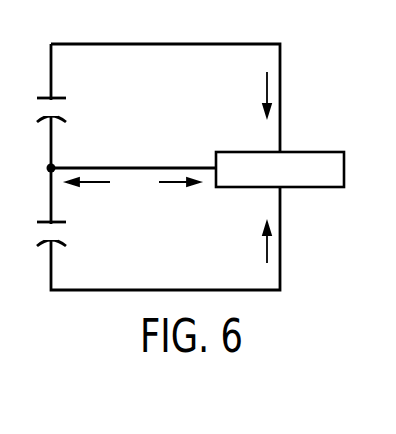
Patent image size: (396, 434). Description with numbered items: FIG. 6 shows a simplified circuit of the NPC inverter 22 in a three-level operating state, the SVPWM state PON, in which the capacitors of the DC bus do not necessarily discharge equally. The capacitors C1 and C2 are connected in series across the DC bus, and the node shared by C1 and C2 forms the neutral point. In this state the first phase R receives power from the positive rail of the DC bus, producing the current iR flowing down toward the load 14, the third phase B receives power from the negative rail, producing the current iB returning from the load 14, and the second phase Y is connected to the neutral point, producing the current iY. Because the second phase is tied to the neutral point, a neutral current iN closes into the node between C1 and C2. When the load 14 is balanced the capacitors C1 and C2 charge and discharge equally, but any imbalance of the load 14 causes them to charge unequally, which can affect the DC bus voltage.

The NPC inverter 22 is at (209, 161).
The load 14 is at (313, 151).
The capacitor C1 is at (66, 104).
The capacitor C2 is at (66, 228).